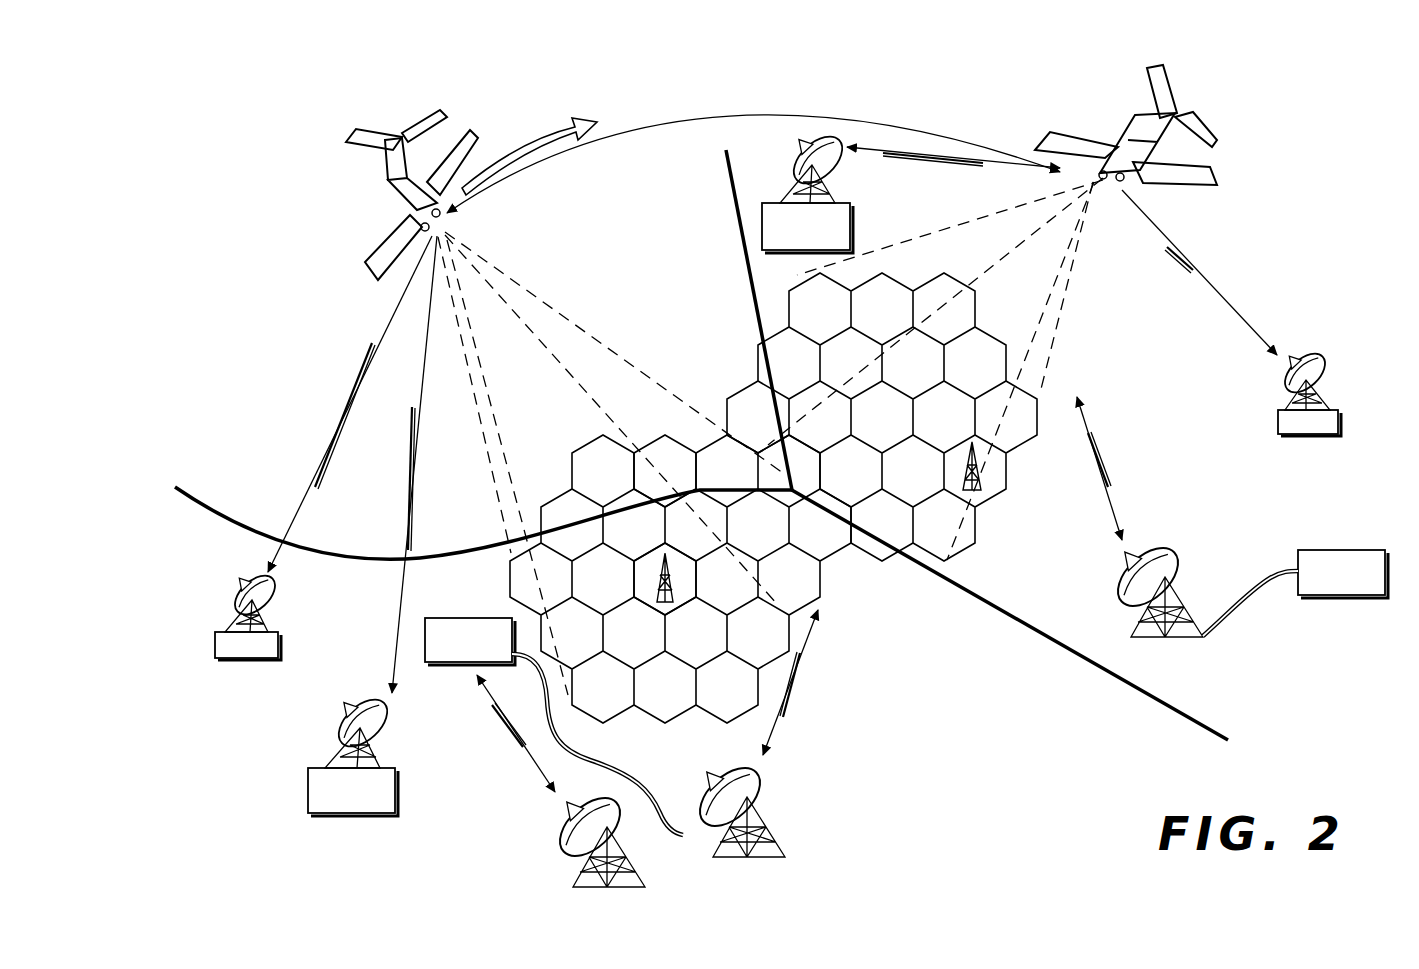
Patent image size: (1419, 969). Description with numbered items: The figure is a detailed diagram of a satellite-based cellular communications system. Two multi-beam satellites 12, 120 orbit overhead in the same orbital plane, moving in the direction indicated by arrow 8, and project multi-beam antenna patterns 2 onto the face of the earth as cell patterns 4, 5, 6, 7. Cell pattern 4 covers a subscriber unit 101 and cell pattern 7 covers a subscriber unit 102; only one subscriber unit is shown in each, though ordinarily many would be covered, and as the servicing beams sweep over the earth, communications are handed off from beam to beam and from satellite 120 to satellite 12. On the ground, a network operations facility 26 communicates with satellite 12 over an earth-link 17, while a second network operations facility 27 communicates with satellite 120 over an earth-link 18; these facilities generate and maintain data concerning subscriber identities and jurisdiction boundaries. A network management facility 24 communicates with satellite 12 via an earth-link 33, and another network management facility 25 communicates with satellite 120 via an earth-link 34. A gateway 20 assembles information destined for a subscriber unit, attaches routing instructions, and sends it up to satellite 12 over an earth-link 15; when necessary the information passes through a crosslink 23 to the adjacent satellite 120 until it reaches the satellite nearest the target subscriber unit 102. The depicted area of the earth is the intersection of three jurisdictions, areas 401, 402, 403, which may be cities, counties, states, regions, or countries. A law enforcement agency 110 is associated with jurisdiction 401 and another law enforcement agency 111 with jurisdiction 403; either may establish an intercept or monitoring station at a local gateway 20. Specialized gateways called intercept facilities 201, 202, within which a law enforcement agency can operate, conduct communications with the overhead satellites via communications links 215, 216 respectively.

The multi-beam antenna patterns 2 is at (538, 300).
The cell pattern 4 is at (645, 579).
The cell pattern 5 is at (722, 518).
The cell pattern 6 is at (660, 440).
The cell pattern 7 is at (1010, 471).
The arrow 8 is at (570, 132).
The multi-beam satellite 12 is at (398, 226).
The earth-link 15 is at (512, 736).
The earth-link 17 is at (360, 357).
The earth-link 18 is at (1193, 268).
The gateway 20 is at (556, 835).
The crosslink 23 is at (652, 134).
The network management facility 24 is at (322, 815).
The network management facility 25 is at (853, 219).
The network operations facility 26 is at (238, 660).
The network operations facility 27 is at (1297, 436).
The earth-link 33 is at (408, 425).
The earth-link 34 is at (938, 160).
The subscriber unit 101 is at (672, 583).
The subscriber unit 102 is at (963, 471).
The law enforcement agency 110 is at (470, 607).
The law enforcement agency 111 is at (1337, 600).
The multi-beam satellite 120 is at (1182, 190).
The intercept facility 201 is at (768, 806).
The intercept facility 202 is at (1183, 556).
The communications link 215 is at (802, 675).
The communications link 216 is at (1100, 460).
The jurisdiction area 401 is at (912, 740).
The jurisdiction area 402 is at (266, 386).
The jurisdiction area 403 is at (1303, 690).